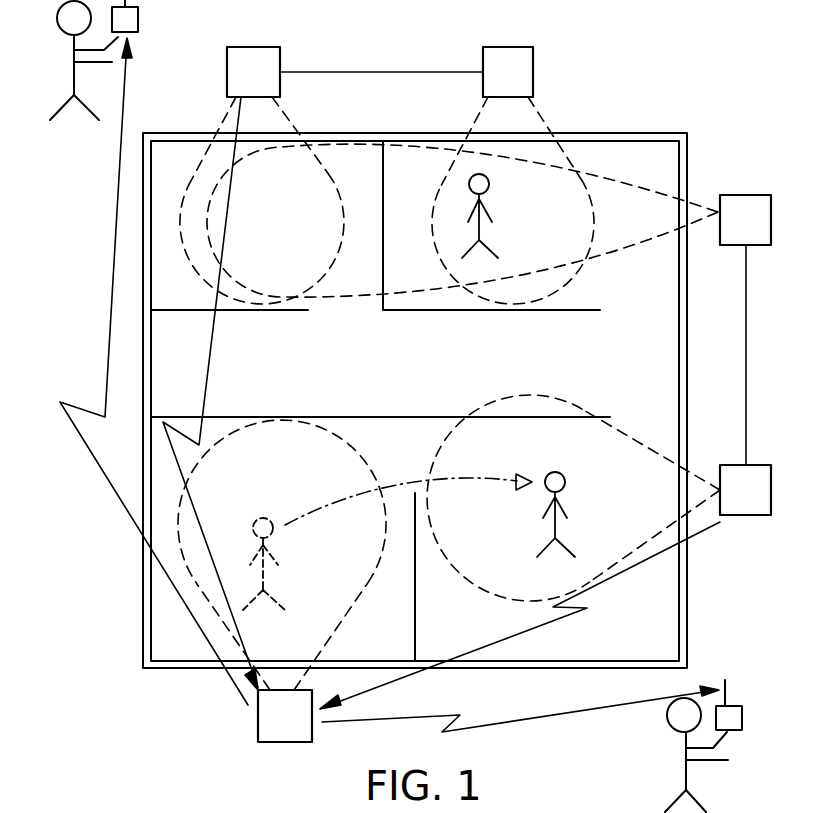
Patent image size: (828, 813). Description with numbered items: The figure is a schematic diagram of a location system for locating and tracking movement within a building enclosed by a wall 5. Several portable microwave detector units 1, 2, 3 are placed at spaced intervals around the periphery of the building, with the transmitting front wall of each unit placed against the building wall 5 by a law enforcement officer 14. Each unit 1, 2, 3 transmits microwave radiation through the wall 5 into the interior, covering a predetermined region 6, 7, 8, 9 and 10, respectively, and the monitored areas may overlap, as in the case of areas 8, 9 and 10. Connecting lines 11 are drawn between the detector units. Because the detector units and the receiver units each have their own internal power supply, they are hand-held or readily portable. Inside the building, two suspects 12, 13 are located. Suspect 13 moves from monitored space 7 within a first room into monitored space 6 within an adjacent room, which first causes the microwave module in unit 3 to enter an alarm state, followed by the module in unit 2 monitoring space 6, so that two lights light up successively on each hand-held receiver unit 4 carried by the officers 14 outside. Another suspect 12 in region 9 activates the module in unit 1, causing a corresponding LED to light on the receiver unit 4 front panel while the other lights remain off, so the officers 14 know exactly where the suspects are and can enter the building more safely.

The portable microwave detector unit 1 is at (627, 146).
The portable microwave detector unit 2 is at (499, 281).
The portable microwave detector unit 3 is at (285, 716).
The hand-held receiver unit 4 is at (138, 27).
The building wall 5 is at (513, 667).
The predetermined region 6 is at (557, 403).
The predetermined region 7 is at (340, 437).
The predetermined region 8 is at (195, 262).
The predetermined region 9 is at (593, 228).
The predetermined region 10 is at (320, 297).
The connection line 11 is at (378, 70).
The suspect 12 is at (490, 213).
The suspect 13 is at (265, 573).
The law enforcement officer 14 is at (70, 55).